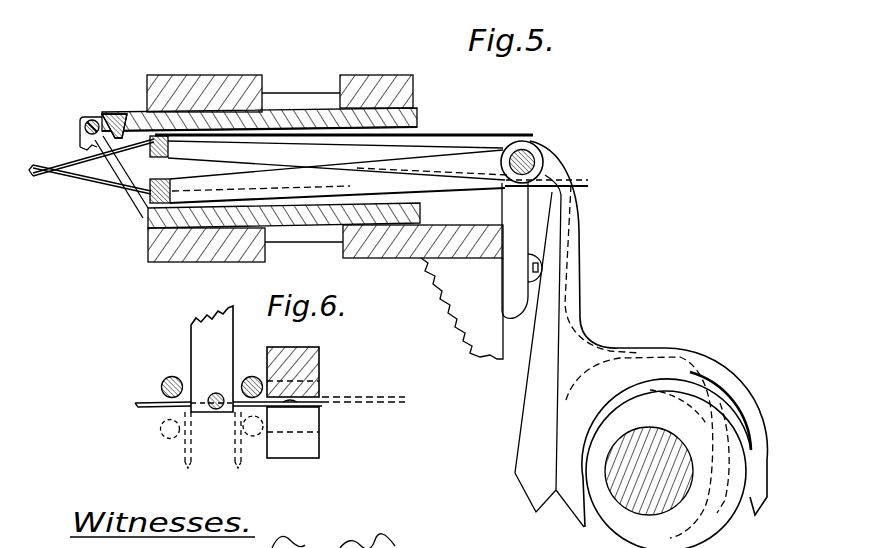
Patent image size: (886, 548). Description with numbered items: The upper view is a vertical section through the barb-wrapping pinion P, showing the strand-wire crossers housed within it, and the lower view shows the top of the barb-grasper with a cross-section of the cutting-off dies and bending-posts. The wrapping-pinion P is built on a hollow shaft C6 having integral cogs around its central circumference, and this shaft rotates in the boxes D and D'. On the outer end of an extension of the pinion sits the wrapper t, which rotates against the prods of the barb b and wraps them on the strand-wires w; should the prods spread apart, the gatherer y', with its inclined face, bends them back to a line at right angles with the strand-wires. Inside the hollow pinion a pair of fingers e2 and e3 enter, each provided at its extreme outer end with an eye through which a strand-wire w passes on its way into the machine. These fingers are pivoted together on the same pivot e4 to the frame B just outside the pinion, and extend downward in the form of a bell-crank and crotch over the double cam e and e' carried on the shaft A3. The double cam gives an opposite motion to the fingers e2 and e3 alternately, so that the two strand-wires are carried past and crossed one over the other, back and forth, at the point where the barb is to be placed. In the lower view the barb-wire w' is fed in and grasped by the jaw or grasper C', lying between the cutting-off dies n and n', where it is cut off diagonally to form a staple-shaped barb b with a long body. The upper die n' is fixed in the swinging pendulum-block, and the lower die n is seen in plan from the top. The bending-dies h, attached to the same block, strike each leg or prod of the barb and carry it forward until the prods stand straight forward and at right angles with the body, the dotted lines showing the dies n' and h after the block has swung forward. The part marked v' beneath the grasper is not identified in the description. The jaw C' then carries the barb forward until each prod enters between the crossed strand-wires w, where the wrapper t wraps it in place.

In FIG. 5, the box D is at (204, 80).
In FIG. 5, the box D' is at (376, 78).
In FIG. 5, the barb-wrapping pinion P is at (295, 93).
In FIG. 5, the hollow shaft C6 is at (417, 112).
In FIG. 5, the wrapper t is at (80, 127).
In FIG. 5, the gatherer y' is at (121, 148).
In FIG. 5, the strand-wire w is at (313, 156).
In FIG. 5, the finger e2 is at (367, 331).
In FIG. 5, the finger e3 is at (458, 339).
In FIG. 5, the pivot e4 is at (528, 157).
In FIG. 5, the frame B is at (481, 270).
In FIG. 5, the shaft A3 is at (649, 471).
In FIG. 5, the cam e is at (666, 469).
In FIG. 5, the cam e' is at (665, 458).
In FIG. 6, the grasper jaw C' is at (213, 387).
In FIG. 6, the bending die h is at (161, 387).
In FIG. 6, the screw v' is at (215, 414).
In FIG. 6, the upper cutting-off die n' is at (309, 372).
In FIG. 6, the lower cutting-off die n is at (293, 432).
In FIG. 6, the barb b is at (137, 407).
In FIG. 6, the barb-wire w' is at (363, 388).